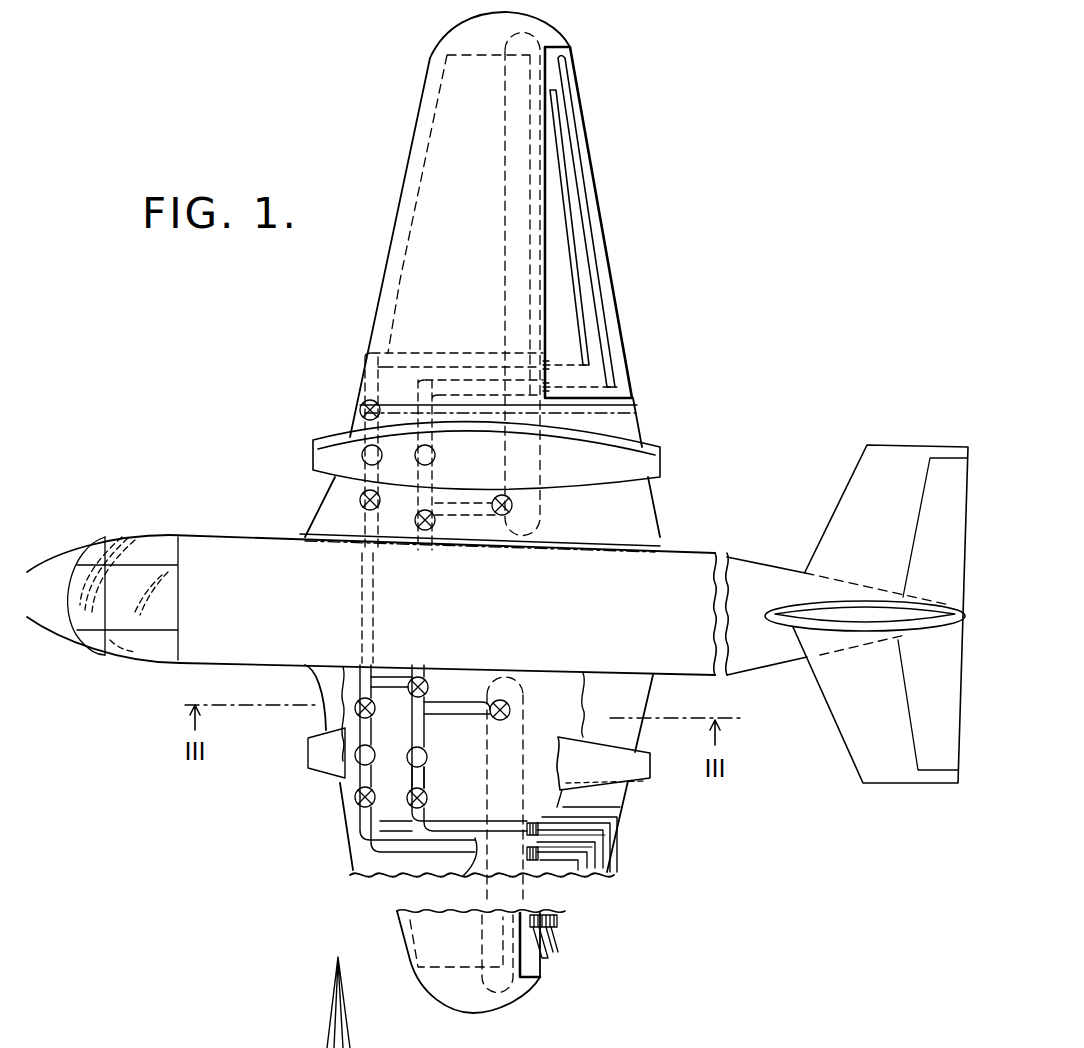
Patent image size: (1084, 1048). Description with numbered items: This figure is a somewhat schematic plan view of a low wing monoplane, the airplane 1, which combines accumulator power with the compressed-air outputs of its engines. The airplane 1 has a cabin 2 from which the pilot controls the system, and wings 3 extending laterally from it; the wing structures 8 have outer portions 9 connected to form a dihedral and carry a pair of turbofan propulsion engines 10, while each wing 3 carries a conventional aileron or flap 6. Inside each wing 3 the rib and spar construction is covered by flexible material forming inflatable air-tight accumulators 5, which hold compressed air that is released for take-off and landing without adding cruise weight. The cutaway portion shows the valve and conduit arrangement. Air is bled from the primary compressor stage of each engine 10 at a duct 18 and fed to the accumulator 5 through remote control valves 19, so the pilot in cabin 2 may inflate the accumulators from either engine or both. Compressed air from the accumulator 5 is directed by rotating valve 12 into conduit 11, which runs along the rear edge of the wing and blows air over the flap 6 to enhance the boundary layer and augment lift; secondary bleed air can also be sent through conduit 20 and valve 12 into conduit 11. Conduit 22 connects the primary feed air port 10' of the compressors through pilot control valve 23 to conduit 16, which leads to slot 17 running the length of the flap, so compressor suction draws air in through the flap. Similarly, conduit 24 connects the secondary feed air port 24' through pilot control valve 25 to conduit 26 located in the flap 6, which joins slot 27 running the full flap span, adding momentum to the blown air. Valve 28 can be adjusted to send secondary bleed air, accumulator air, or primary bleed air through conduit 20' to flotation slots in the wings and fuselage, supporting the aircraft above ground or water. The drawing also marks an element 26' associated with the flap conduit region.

The airplane 1 is at (183, 663).
The cabin 2 is at (137, 580).
The wings 3 is at (478, 45).
The accumulators 5 is at (422, 178).
The ailerons 6 is at (612, 333).
The wing structures 8 is at (640, 513).
The outer portions 9 is at (390, 255).
The turbofan propulsion engines 10 is at (510, 596).
The feed air port 10' is at (323, 594).
The conduit 11 is at (500, 305).
The valve 12 is at (520, 508).
The conduit 16 is at (522, 866).
The slot 17 is at (566, 216).
The duct 18 is at (363, 733).
The control valves 19 is at (358, 503).
The conduit 20 is at (488, 583).
The conduit 20' is at (429, 651).
The conduit 22 is at (345, 885).
The pilot control valve 23 is at (400, 777).
The conduit 24 is at (461, 600).
The secondary feed air port 24' is at (449, 596).
The pilot control valve 25 is at (430, 800).
The conduit 26 is at (615, 830).
The flap member 26' is at (626, 800).
The slot 27 is at (603, 281).
The valve 28 is at (443, 517).